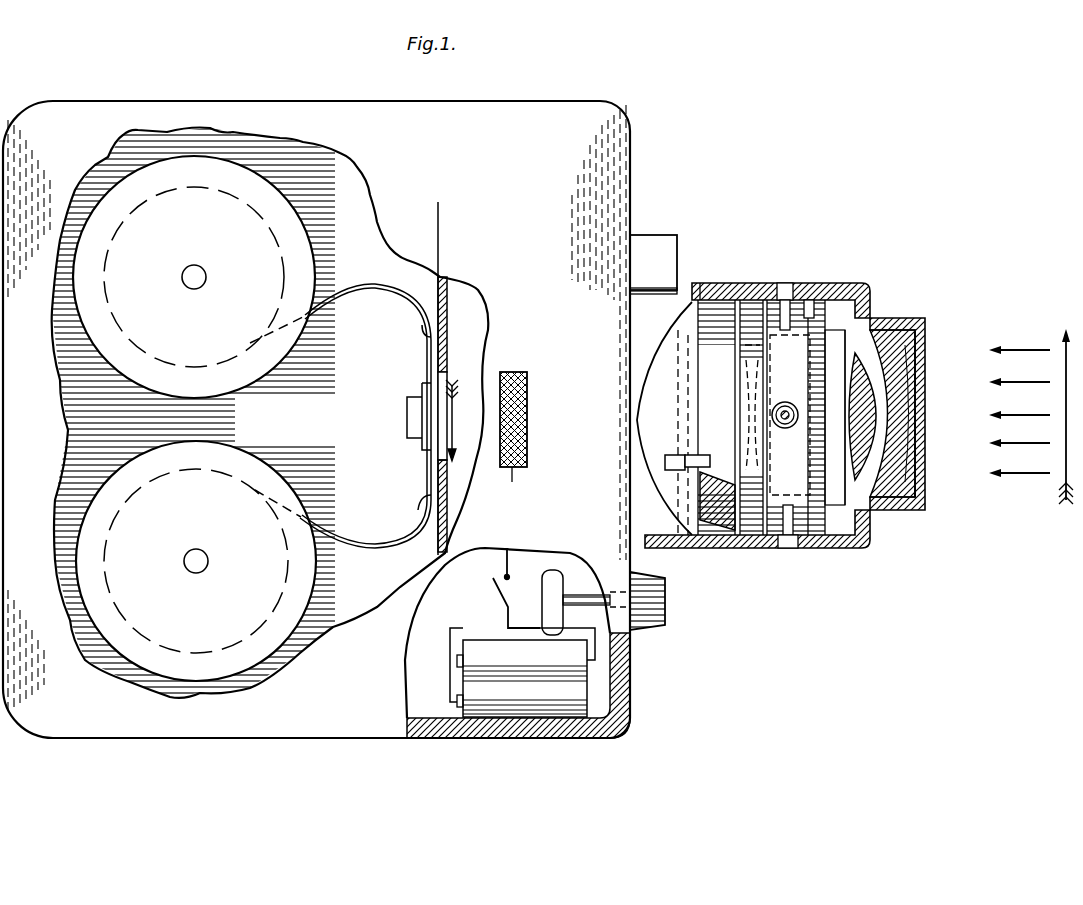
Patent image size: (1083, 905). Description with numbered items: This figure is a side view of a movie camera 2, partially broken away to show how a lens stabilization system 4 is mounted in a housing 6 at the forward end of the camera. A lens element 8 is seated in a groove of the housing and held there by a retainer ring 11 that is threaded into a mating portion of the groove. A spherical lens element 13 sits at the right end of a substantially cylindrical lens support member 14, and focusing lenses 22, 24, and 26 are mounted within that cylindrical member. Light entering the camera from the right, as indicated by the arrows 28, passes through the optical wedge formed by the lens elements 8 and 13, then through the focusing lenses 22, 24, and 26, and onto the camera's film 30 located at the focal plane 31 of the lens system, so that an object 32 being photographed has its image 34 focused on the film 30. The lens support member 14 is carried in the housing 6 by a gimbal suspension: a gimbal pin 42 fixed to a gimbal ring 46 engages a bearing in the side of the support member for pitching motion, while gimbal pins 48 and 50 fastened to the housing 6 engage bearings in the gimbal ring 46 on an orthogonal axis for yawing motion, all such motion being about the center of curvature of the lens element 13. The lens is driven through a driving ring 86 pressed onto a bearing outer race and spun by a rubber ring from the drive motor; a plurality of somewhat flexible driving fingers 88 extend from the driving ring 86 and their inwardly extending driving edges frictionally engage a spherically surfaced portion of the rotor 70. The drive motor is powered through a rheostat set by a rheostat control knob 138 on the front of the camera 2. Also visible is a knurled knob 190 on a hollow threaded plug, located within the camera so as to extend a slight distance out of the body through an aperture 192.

The movie camera 2 is at (606, 101).
The lens stabilization system 4 is at (828, 335).
The housing 6 is at (738, 292).
The lens element 8 is at (900, 466).
The retainer ring 11 is at (922, 337).
The spherical lens element 13 is at (872, 428).
The lens support member 14 is at (878, 304).
The focusing lens 22 is at (797, 381).
The focusing lens 24 is at (752, 380).
The focusing lens 26 is at (714, 386).
The arrows 28 is at (1033, 382).
The film 30 is at (378, 287).
The focal plane 31 is at (440, 240).
The object 32 is at (1063, 466).
The image 34 is at (459, 383).
The gimbal pin 42 is at (783, 403).
The gimbal ring 46 is at (780, 285).
The gimbal pin 48 is at (820, 290).
The gimbal pin 50 is at (790, 548).
The rotor 70 is at (718, 531).
The driving ring 86 is at (668, 522).
The driving fingers 88 is at (700, 283).
The rheostat control knob 138 is at (656, 628).
The knurled knob 190 is at (527, 390).
The aperture 192 is at (512, 468).